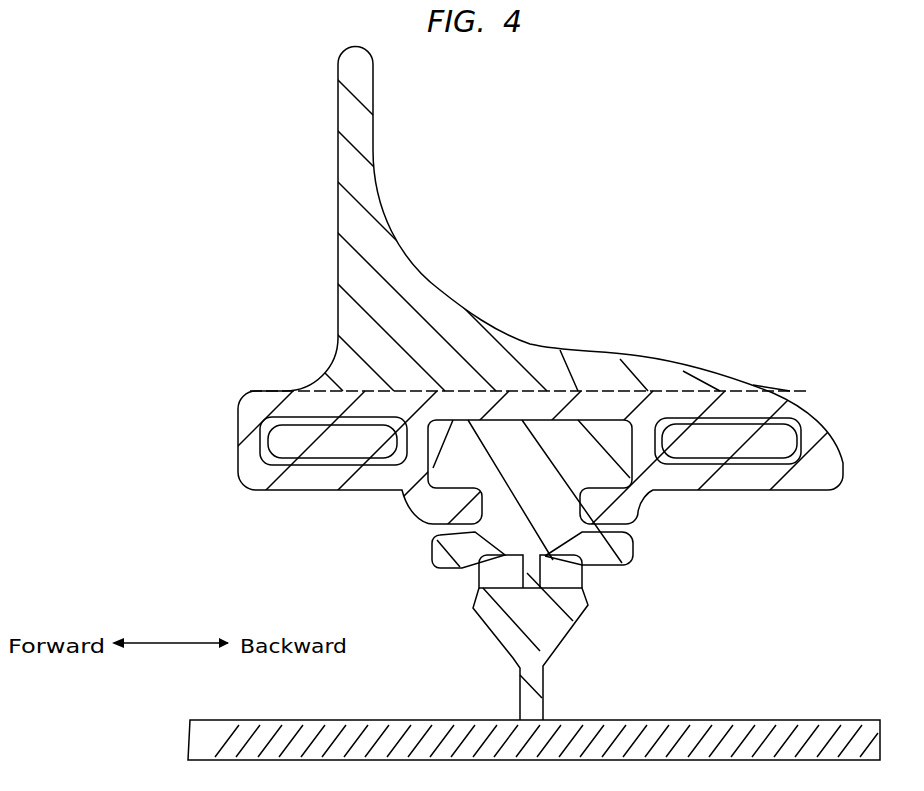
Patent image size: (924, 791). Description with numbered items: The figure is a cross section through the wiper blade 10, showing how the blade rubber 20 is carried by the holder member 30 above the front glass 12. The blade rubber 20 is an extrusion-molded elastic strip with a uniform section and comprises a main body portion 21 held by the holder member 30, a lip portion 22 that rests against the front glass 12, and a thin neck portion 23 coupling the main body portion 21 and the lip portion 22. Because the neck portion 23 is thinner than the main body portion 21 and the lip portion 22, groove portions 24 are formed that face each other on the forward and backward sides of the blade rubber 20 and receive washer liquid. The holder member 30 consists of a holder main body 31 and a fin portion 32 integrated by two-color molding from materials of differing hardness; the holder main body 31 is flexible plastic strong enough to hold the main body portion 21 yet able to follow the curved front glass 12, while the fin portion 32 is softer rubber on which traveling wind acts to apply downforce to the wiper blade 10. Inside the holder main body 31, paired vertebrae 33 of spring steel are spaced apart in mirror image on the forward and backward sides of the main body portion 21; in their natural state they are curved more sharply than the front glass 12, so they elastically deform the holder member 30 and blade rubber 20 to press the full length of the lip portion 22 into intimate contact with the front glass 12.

The wiper blade 10 is at (497, 212).
The front glass 12 is at (218, 743).
The blade rubber 20 is at (566, 629).
The main body portion 21 is at (532, 463).
The lip portion 22 is at (530, 653).
The neck portion 23 is at (530, 574).
The groove portions 24 is at (557, 582).
The holder member 30 is at (651, 357).
The holder main body 31 is at (742, 482).
The fin portion 32 is at (362, 236).
The vertebrae 33 is at (323, 447).